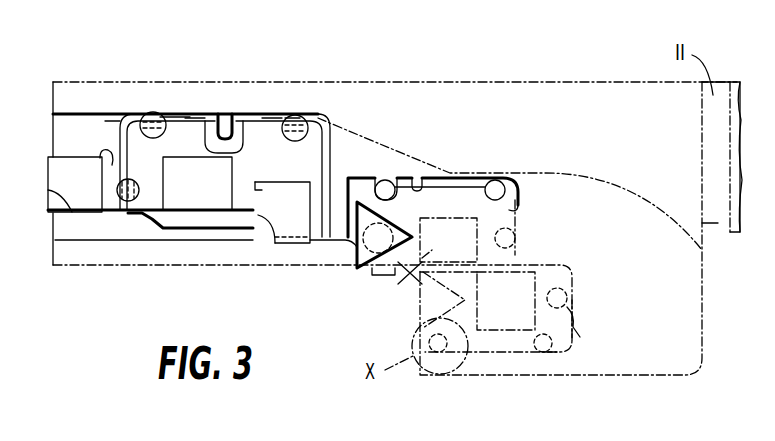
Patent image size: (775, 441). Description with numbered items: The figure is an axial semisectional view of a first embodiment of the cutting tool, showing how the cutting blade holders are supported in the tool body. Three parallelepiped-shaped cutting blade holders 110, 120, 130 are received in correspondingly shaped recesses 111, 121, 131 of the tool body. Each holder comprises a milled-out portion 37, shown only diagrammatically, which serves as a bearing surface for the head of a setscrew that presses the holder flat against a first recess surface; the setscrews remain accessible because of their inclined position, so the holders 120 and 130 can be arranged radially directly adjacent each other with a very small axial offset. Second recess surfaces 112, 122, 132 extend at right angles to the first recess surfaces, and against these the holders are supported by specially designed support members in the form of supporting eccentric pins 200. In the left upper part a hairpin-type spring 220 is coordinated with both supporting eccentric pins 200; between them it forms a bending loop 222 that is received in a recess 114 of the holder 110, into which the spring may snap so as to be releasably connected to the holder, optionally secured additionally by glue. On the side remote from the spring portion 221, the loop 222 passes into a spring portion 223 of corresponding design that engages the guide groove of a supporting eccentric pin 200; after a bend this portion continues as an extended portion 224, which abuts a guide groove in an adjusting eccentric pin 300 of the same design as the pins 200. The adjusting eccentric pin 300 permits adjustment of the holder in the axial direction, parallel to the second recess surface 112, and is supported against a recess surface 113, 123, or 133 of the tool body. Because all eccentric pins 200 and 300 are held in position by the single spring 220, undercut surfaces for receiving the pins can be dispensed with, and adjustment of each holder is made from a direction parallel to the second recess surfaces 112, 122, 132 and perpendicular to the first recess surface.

The milled-out portion 37 is at (205, 210).
The cutting blade holder 110 is at (276, 164).
The recess 111 is at (221, 112).
The second recess surface 112 is at (192, 115).
The recess surface 113 is at (112, 152).
The recess 114 is at (224, 135).
The cutting blade holder 120 is at (450, 178).
The recess 121 is at (348, 193).
The second recess surface 122 is at (417, 178).
The recess surface 123 is at (515, 215).
The cutting blade holder 130 is at (566, 350).
The recess 131 is at (570, 318).
The second recess surface 132 is at (497, 356).
The recess surface 133 is at (573, 337).
The supporting eccentric pin 200 is at (153, 112).
The hairpin-type spring 220 is at (120, 118).
The spring portion 221 is at (290, 116).
The bending loop 222 is at (270, 119).
The spring portion 223 is at (175, 119).
The extended portion 224 is at (115, 168).
The adjusting eccentric pin 300 is at (137, 203).